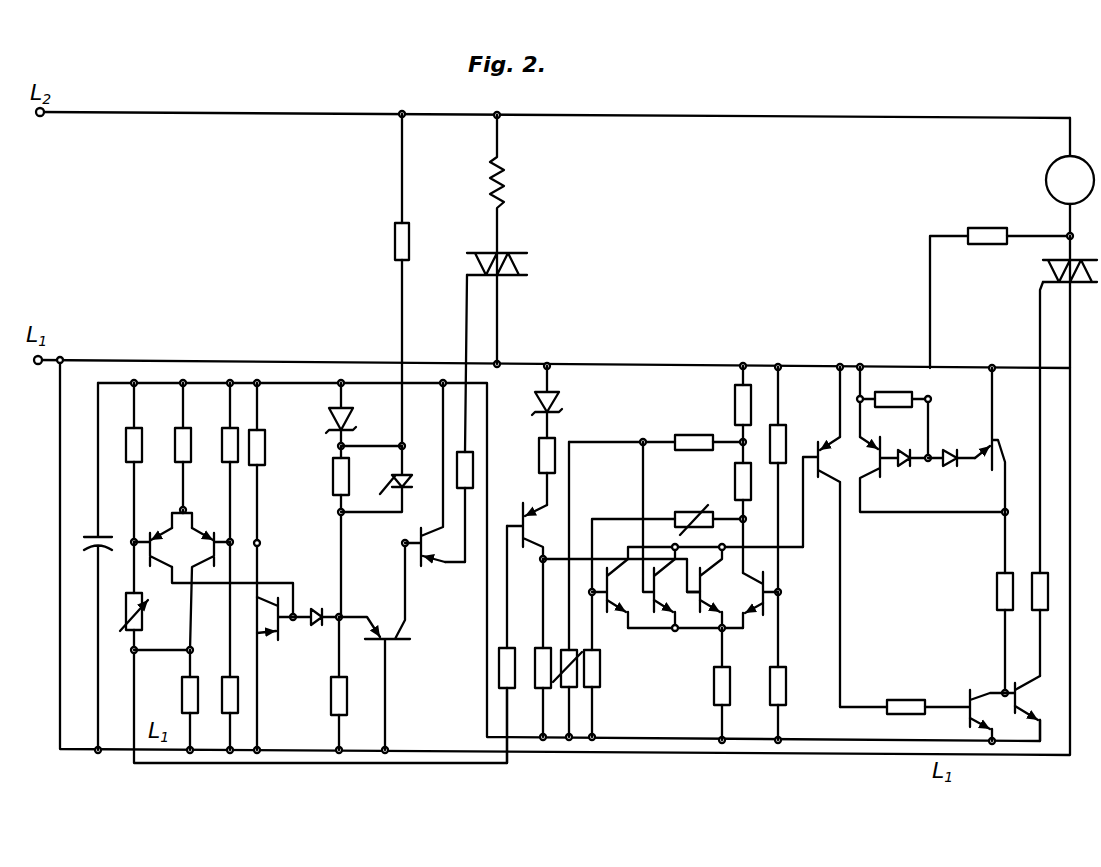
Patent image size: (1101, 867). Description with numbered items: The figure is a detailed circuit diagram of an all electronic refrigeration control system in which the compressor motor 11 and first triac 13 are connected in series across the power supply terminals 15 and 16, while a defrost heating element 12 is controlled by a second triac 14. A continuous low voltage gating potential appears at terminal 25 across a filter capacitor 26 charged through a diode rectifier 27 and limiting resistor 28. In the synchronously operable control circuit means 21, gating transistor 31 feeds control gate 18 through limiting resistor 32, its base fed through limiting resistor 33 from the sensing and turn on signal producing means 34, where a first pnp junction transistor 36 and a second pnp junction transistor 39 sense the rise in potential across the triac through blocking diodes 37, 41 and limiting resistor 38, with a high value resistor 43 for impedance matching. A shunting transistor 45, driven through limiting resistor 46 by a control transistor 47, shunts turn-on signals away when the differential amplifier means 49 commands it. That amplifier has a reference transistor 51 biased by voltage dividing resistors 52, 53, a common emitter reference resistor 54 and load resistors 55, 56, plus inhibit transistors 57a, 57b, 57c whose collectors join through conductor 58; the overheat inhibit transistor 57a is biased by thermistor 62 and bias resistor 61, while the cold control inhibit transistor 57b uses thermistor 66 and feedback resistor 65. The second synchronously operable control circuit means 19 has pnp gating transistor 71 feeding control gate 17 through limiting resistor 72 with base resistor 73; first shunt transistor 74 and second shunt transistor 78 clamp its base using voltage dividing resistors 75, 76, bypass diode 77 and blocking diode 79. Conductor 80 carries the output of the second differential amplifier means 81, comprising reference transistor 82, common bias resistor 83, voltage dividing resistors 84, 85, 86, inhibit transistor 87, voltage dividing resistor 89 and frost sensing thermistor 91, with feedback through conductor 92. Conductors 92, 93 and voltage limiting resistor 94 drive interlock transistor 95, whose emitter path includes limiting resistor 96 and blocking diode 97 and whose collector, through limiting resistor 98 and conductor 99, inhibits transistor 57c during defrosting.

The compressor motor 11 is at (1048, 166).
The defrost heating element 12 is at (510, 182).
The first triac 13 is at (1083, 284).
The second triac 14 is at (510, 278).
The power supply terminal 15 is at (183, 106).
The power supply terminal 16 is at (646, 363).
The control gate of triac 14 17 is at (466, 276).
The control gate of triac 13 18 is at (1043, 284).
The second synchronously operable control circuit means 19 is at (382, 536).
The synchronously operable control circuit means 21 is at (930, 611).
The low voltage D.C. gating potential terminal 25 is at (288, 384).
The filter capacitor 26 is at (105, 535).
The diode rectifier 27 is at (349, 419).
The limiting resistor 28 is at (395, 242).
The gating transistor 31 is at (1014, 680).
The limiting resistor 32 is at (1043, 611).
The limiting resistor 33 is at (997, 586).
The sensing and turn on signal producing means 34 is at (962, 506).
The first pnp junction transistor 36 is at (1003, 439).
The blocking diode 37 is at (947, 448).
The limiting resistor 38 is at (986, 228).
The second pnp junction transistor 39 is at (884, 440).
The blocking diode 41 is at (901, 470).
The high value resistor 43 is at (887, 392).
The shunting transistor 45 is at (972, 689).
The limiting resistor 46 is at (903, 700).
The control transistor 47 is at (816, 440).
The differential amplifier means 49 is at (688, 496).
The reference transistor 51 is at (770, 579).
The voltage dividing resistor 52 is at (783, 428).
The voltage dividing resistor 53 is at (786, 686).
The common emitter reference resistor 54 is at (714, 687).
The load resistor 55 is at (736, 473).
The load resistor 56 is at (736, 396).
The overheat inhibit transistor 57a is at (603, 619).
The cold control inhibit transistor 57b is at (650, 632).
The third inhibit transistor 57c is at (695, 631).
The conductor 58 is at (806, 546).
The bias resistor 61 is at (600, 681).
The overheat temperature sensing thermistor 62 is at (702, 513).
The feedback resistor 65 is at (680, 435).
The cold control temperature sensitive resistor 66 is at (571, 688).
The gating transistor 71 is at (418, 524).
The limiting resistor 72 is at (457, 467).
The limiting resistor 73 is at (265, 451).
The first shunt transistor 74 is at (403, 648).
The voltage dividing resistor 75 is at (330, 693).
The voltage dividing resistor 76 is at (348, 479).
The bypass diode 77 is at (376, 479).
The second shunt transistor 78 is at (281, 642).
The blocking diode 79 is at (316, 606).
The conductor 80 is at (234, 593).
The second differential amplifier means 81 is at (183, 566).
The reference transistor 82 is at (208, 522).
The common bias resistor 83 is at (188, 428).
The voltage dividing resistor 84 is at (182, 691).
The voltage dividing resistor 85 is at (222, 455).
The voltage dividing resistor 86 is at (224, 676).
The inhibit transistor 87 is at (158, 522).
The voltage dividing resistor 89 is at (142, 432).
The temperature sensitive variable resistance thermistor 91 is at (142, 613).
The conductor 92 is at (140, 652).
The conductor 93 is at (277, 764).
The voltage limiting resistor 94 is at (499, 664).
The interlock transistor 95 is at (520, 513).
The limiting resistor 96 is at (538, 457).
The blocking diode 97 is at (535, 400).
The limiting resistor 98 is at (536, 686).
The conductor 99 is at (600, 560).